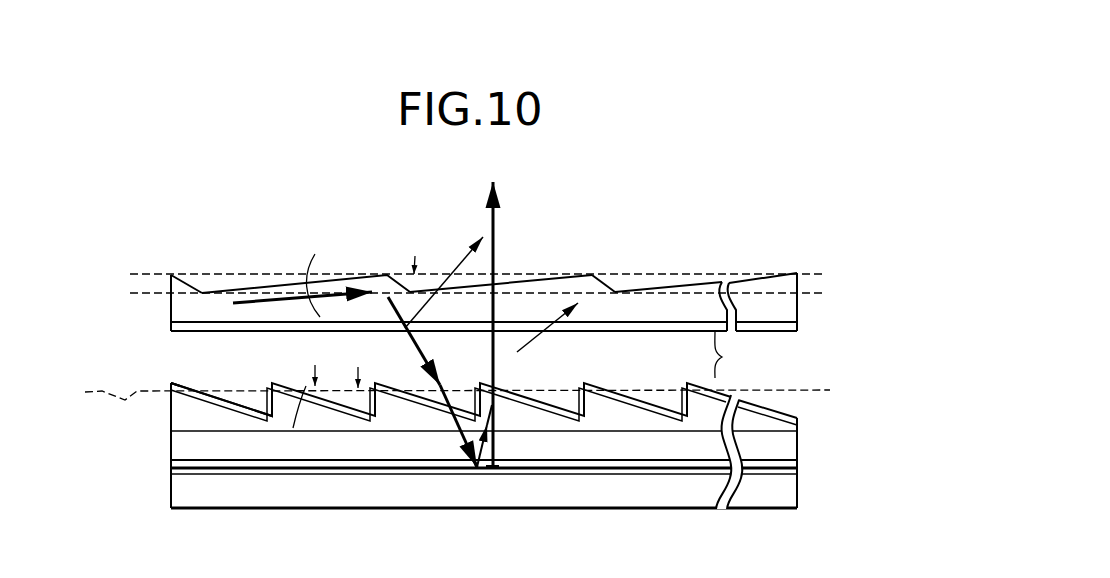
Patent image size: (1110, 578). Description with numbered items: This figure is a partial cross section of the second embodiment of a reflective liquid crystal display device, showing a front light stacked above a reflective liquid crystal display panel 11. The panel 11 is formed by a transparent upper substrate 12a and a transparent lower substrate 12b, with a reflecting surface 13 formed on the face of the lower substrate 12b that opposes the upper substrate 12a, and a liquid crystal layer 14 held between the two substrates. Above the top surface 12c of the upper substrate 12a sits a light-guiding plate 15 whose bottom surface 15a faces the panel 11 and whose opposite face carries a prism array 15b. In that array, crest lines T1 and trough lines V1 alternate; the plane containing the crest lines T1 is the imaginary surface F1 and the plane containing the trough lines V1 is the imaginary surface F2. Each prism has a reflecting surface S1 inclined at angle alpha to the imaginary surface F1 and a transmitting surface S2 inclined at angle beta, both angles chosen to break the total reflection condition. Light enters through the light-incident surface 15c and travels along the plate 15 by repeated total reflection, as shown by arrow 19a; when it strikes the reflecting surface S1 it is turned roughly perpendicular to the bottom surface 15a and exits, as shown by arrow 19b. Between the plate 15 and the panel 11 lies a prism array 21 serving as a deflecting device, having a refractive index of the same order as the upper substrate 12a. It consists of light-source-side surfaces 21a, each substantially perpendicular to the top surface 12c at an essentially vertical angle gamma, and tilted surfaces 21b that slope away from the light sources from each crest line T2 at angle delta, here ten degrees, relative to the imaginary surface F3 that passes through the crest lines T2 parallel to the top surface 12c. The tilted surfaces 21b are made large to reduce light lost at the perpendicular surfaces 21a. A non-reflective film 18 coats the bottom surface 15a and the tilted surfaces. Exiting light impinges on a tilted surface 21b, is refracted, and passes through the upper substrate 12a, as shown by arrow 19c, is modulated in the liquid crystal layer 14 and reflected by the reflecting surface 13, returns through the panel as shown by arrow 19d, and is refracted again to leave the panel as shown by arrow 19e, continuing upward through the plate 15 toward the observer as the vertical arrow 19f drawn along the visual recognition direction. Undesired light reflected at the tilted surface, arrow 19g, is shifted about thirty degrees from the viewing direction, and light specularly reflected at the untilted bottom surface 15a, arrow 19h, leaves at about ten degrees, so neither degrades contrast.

The light-guiding plate 15 is at (190, 315).
The bottom surface 15a is at (621, 331).
The prism array 15b is at (710, 288).
The light-incident surface 15c is at (167, 292).
The non-reflective film 18 is at (736, 354).
The arrow showing light transmitted inside the light-guiding plate 19a is at (240, 295).
The arrow showing exiting light 19b is at (412, 345).
The arrow showing light impinging on the tilted surface 19c is at (452, 414).
The arrow showing reflected light returning through the panel 19d is at (491, 457).
The arrow showing light exiting the panel 19e is at (489, 347).
The emitted light ray 19f is at (498, 262).
The arrow showing light reflected at the tilted surface 19g is at (517, 352).
The arrow showing light reflected at the bottom surface 19h is at (452, 263).
The reflective liquid crystal display panel 11 is at (180, 440).
The upper substrate 12a is at (190, 453).
The lower substrate 12b is at (183, 490).
The top surface 12c is at (223, 433).
The reflecting surface 13 is at (632, 472).
The liquid crystal layer 14 is at (568, 466).
The prism array 21 is at (325, 413).
The light-source-side surfaces 21a is at (270, 392).
The tilted surfaces 21b is at (684, 416).
The imaginary surface F1 is at (131, 272).
The imaginary surface F2 is at (145, 295).
The imaginary surface F3 is at (441, 394).
The trough lines V1 is at (203, 293).
The crest lines T1 is at (383, 273).
The crest lines T2 is at (171, 384).
The reflecting surface S1 is at (617, 282).
The transmitting surface S2 is at (545, 274).